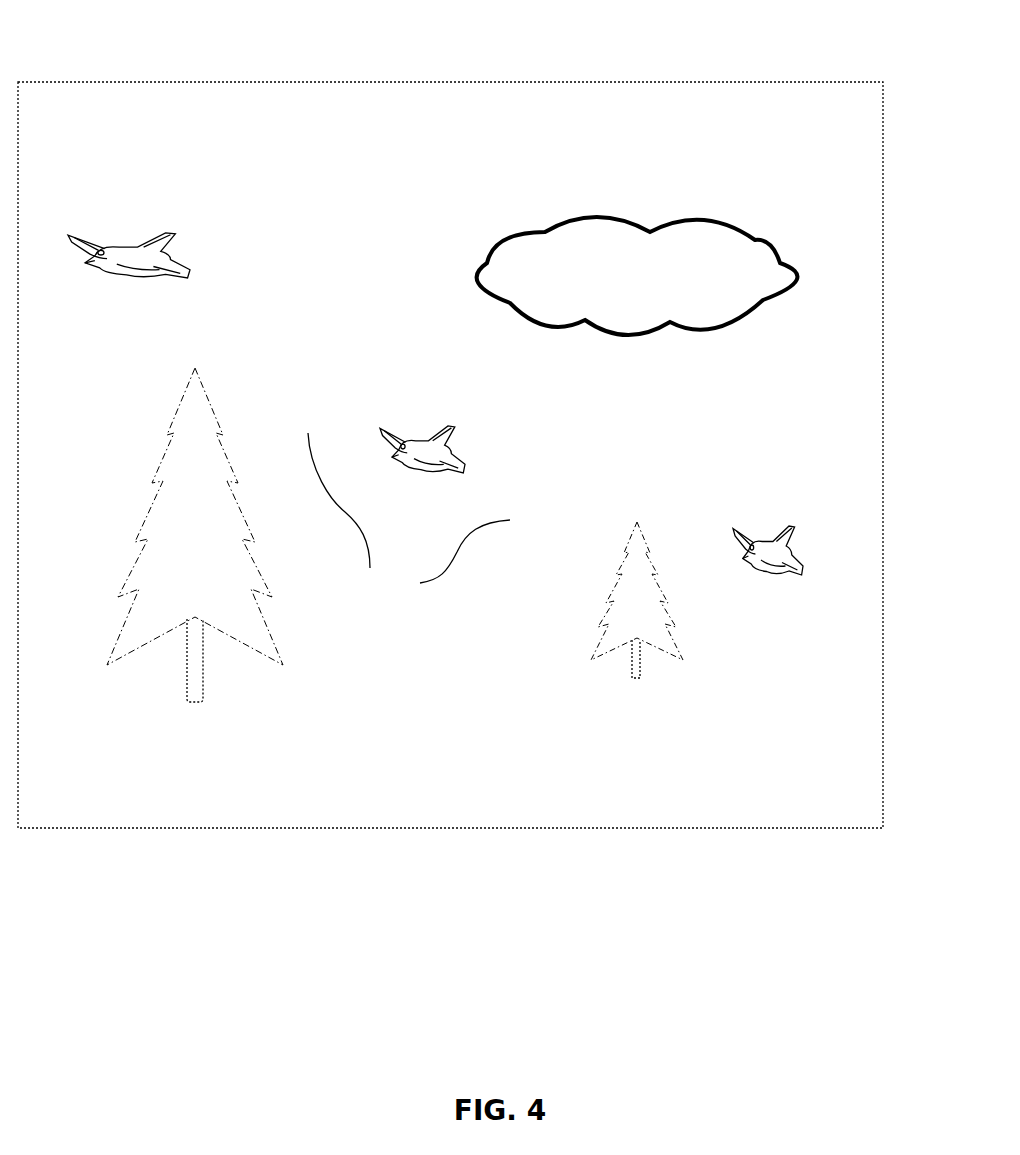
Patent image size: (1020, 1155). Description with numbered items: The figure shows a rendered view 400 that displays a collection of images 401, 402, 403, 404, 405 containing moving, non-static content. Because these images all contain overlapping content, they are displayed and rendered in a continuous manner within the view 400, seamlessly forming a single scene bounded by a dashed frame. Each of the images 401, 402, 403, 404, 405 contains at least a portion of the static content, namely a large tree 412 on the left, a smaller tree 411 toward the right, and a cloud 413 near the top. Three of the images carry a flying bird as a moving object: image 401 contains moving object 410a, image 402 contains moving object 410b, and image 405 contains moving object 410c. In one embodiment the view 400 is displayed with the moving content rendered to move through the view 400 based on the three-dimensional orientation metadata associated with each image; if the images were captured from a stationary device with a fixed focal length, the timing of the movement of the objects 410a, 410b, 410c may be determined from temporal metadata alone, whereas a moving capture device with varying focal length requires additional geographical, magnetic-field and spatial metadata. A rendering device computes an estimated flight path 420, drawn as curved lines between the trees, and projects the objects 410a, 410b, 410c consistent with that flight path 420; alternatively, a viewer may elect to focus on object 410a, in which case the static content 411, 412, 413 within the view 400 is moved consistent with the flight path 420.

The view 400 is at (468, 67).
The image 401 is at (155, 65).
The image 402 is at (377, 112).
The image 403 is at (392, 932).
The image 404 is at (722, 67).
The image 405 is at (712, 845).
The moving object 410a is at (805, 513).
The moving object 410b is at (397, 423).
The moving object 410c is at (107, 225).
The static content 411 is at (613, 672).
The static content 412 is at (168, 693).
The static content 413 is at (601, 203).
The flight path 420 is at (409, 513).